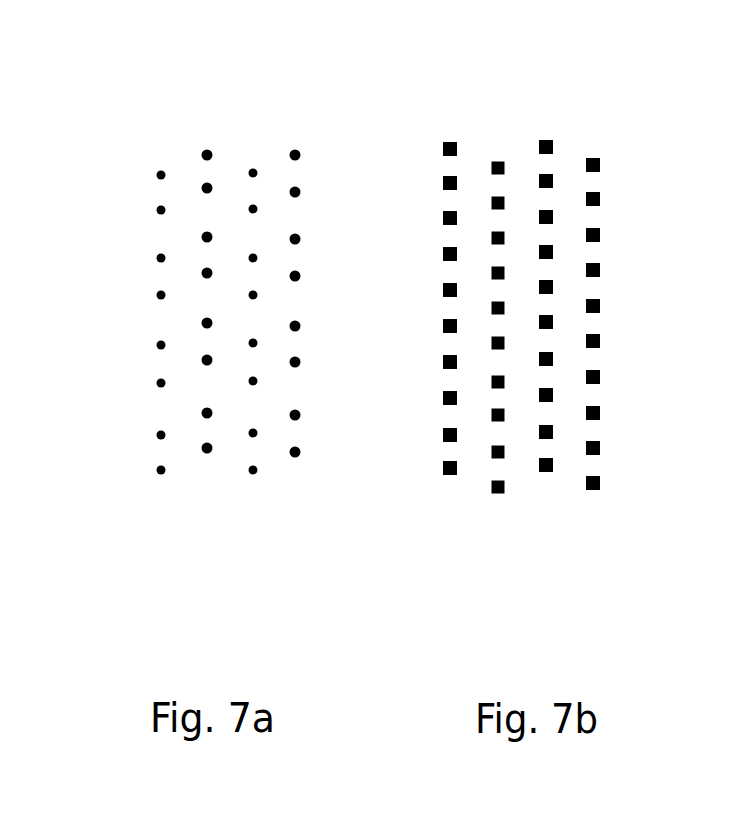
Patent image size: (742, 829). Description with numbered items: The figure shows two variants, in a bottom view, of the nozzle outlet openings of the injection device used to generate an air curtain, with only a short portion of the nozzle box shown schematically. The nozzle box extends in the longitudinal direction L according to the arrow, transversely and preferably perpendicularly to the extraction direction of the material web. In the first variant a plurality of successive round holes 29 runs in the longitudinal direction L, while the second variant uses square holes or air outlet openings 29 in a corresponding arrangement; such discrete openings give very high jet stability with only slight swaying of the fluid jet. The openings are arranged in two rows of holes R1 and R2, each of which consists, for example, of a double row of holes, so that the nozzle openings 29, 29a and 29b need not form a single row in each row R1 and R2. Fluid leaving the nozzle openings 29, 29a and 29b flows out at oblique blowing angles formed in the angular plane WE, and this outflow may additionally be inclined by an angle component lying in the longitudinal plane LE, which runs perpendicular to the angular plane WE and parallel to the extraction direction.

In FIG. 7A, the nozzle openings 29 is at (282, 256).
In FIG. 7B, the nozzle openings 29 is at (541, 317).
In FIG. 7A, the nozzle openings 29a is at (258, 207).
In FIG. 7B, the nozzle openings 29a is at (552, 283).
In FIG. 7A, the nozzle openings 29b is at (206, 185).
In FIG. 7B, the nozzle openings 29b is at (492, 415).
In FIG. 7A, the row of holes R1 is at (297, 474).
In FIG. 7B, the row of holes R1 is at (550, 484).
In FIG. 7A, the row of holes R2 is at (207, 462).
In FIG. 7B, the row of holes R2 is at (453, 485).
In FIG. 7A, the longitudinal direction L is at (90, 250).
In FIG. 7B, the angular plane WE is at (527, 117).
In FIG. 7B, the longitudinal plane LE is at (612, 305).